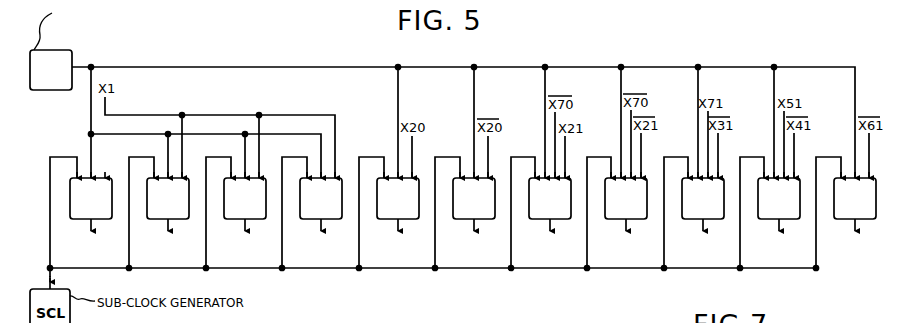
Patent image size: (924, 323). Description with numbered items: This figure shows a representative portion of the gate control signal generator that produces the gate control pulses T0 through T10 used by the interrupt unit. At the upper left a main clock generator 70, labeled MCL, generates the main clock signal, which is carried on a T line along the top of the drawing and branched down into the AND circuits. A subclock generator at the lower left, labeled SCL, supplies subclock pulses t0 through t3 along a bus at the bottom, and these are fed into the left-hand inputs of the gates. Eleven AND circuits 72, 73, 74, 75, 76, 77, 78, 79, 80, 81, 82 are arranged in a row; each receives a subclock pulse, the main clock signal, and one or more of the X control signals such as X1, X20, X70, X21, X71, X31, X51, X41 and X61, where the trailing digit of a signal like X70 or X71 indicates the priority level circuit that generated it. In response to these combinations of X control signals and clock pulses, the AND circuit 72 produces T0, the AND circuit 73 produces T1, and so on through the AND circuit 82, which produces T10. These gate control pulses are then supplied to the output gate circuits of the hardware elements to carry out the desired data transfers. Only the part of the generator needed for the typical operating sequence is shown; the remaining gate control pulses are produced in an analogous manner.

The main clock generator 70 is at (48, 50).
The AND circuit 72 is at (73, 219).
The AND circuit 73 is at (150, 219).
The AND circuit 74 is at (227, 219).
The AND circuit 75 is at (303, 219).
The AND circuit 76 is at (380, 219).
The AND circuit 77 is at (456, 219).
The AND circuit 78 is at (532, 219).
The AND circuit 79 is at (608, 219).
The AND circuit 80 is at (685, 219).
The AND circuit 81 is at (761, 219).
The AND circuit 82 is at (837, 219).